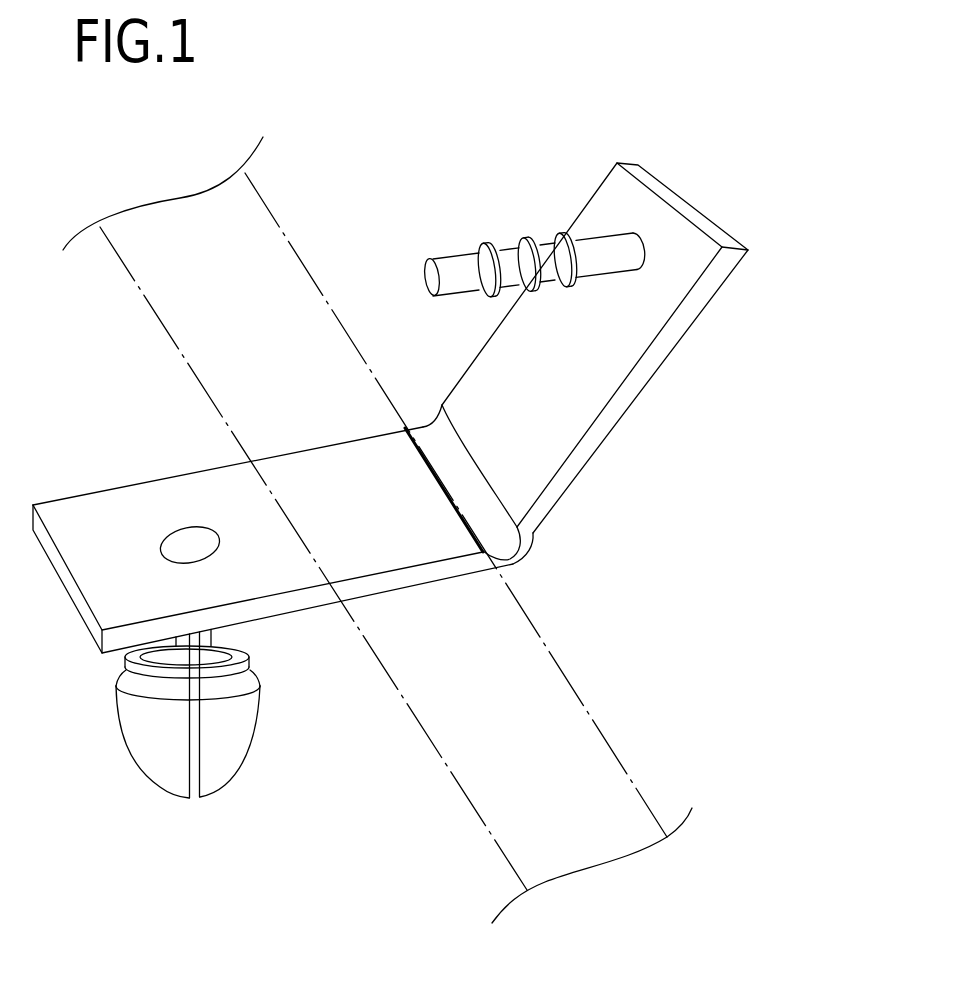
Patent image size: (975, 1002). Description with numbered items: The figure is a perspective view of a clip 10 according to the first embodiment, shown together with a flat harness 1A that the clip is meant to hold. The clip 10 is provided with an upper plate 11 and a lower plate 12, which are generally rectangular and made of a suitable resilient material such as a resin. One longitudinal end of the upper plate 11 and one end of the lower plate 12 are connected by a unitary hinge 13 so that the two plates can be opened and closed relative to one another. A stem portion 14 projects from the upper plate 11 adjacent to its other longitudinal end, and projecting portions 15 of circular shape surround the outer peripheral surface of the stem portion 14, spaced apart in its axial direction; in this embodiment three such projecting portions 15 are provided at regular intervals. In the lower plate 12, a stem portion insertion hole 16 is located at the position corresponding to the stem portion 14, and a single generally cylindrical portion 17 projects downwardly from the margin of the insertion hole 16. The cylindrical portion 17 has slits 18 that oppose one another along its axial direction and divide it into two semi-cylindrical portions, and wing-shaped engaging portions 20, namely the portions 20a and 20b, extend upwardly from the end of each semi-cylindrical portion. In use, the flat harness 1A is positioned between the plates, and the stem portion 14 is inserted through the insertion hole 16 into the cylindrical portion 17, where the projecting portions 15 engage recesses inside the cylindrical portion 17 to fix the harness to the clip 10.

The flat harness 1A is at (587, 694).
The clip 10 is at (378, 216).
The upper plate 11 is at (667, 362).
The lower plate 12 is at (322, 607).
The hinge 13 is at (517, 558).
The stem portion 14 is at (537, 243).
The projecting portions 15 is at (488, 243).
The stem portion insertion hole 16 is at (180, 543).
The cylindrical portion 17 is at (130, 673).
The slits 18 is at (177, 797).
The wing-shaped engaging portions 20 is at (188, 786).
The wing-shaped engaging portion 20a is at (138, 767).
The wing-shaped engaging portion 20b is at (253, 753).